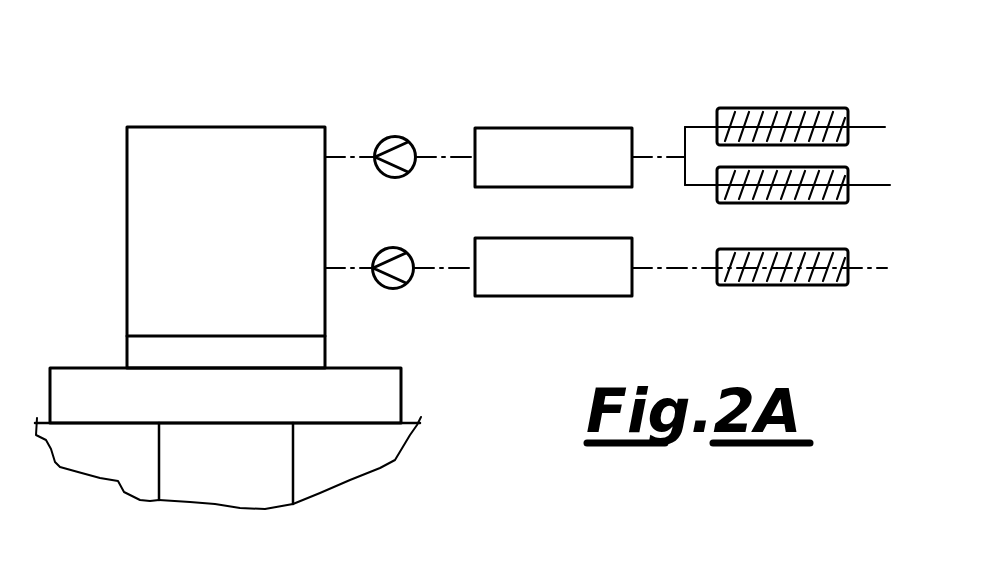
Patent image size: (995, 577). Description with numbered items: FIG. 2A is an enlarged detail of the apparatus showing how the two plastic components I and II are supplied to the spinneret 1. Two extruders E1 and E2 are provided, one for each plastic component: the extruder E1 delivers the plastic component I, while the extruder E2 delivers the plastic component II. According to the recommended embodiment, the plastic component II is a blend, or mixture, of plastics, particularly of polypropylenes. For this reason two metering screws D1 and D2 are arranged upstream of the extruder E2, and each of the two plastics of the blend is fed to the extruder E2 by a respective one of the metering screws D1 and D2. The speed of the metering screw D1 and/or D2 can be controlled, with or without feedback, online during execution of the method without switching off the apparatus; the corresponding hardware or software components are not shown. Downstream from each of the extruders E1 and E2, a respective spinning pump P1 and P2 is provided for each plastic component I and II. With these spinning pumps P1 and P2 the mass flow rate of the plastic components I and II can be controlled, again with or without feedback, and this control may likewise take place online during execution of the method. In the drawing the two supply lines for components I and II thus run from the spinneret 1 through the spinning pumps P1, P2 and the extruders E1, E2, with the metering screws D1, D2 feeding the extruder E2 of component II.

The spinneret 1 is at (258, 128).
The spinning pump P1 is at (390, 289).
The spinning pump P2 is at (392, 136).
The plastic component I is at (431, 280).
The plastic component II is at (434, 150).
The extruder E1 is at (562, 284).
The extruder E2 is at (557, 140).
The metering screw D1 is at (748, 124).
The metering screw D2 is at (760, 195).